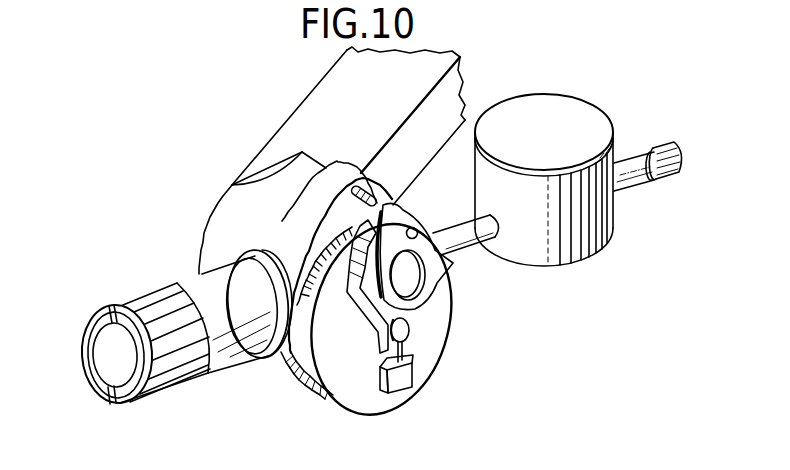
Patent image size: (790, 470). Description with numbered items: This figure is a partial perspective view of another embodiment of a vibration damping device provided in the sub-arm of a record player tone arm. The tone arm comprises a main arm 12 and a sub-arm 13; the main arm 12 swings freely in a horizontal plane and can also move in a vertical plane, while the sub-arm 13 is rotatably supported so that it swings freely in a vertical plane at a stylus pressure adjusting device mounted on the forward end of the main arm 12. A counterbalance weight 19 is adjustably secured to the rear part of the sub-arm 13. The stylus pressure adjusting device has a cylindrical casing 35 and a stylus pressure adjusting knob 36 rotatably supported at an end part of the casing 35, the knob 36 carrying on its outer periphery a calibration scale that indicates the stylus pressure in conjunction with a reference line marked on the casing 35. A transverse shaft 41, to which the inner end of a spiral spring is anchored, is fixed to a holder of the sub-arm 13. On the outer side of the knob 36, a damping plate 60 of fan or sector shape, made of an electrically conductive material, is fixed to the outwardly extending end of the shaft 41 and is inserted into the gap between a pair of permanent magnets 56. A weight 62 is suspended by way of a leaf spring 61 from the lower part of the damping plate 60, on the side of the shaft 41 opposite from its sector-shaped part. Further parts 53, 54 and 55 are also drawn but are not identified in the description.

The main arm 12 is at (302, 104).
The sub-arm 13 is at (467, 256).
The counterbalance weight 19 is at (590, 113).
The cylindrical casing 35 is at (282, 181).
The stylus pressure adjusting knob 36 is at (338, 396).
The transverse shaft 41 is at (409, 332).
The graduated dial 53 is at (345, 163).
The pin 54 is at (376, 192).
The cam plate 55 is at (410, 212).
The permanent magnets 56 is at (415, 283).
The damping plate 60 is at (366, 298).
The leaf spring 61 is at (406, 352).
The weight 62 is at (400, 383).